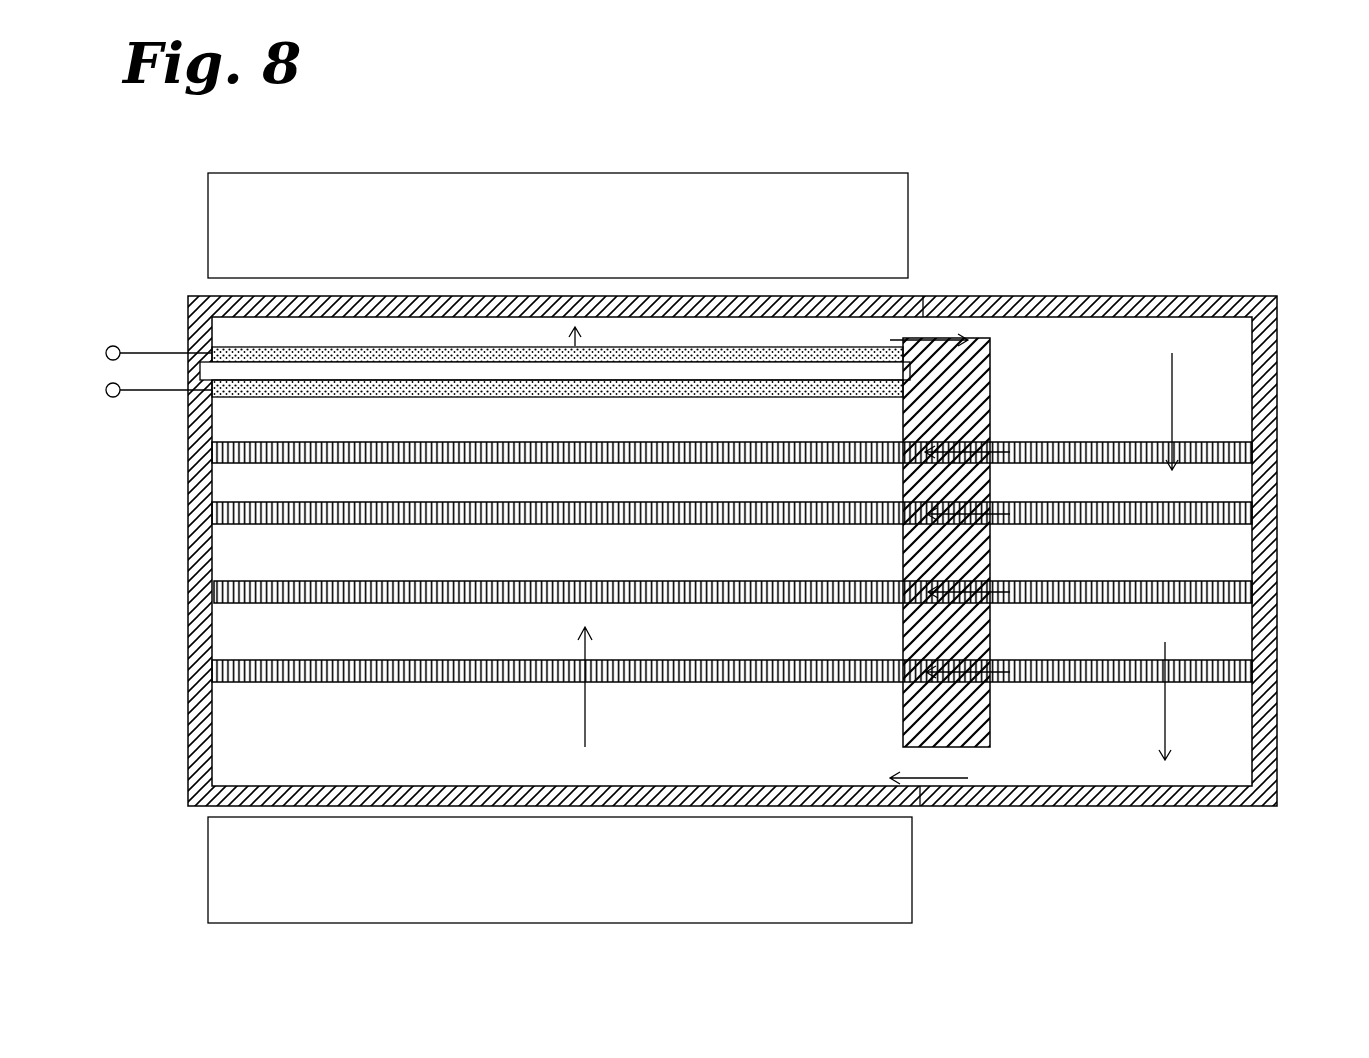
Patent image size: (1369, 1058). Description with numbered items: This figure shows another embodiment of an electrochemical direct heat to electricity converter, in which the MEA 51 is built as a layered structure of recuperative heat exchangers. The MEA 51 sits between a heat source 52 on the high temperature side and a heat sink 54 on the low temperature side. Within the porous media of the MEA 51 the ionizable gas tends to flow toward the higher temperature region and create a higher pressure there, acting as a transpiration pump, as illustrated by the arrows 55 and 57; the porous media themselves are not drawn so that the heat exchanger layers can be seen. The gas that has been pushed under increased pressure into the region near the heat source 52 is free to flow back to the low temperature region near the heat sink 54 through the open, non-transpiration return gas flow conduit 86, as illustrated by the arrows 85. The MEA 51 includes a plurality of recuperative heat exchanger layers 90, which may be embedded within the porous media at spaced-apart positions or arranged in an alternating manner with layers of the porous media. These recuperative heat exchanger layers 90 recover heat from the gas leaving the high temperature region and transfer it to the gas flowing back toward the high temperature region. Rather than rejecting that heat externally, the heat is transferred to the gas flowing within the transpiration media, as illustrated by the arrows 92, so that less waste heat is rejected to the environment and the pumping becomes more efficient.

The MEA 51 is at (257, 347).
The heat source 52 is at (860, 172).
The heat sink 54 is at (912, 907).
The arrow 55 is at (578, 330).
The arrow 57 is at (585, 690).
The arrows 85 is at (940, 297).
The return gas flow conduit 86 is at (1197, 337).
The recuperative heat exchanger layers 90 is at (1088, 500).
The arrows 92 is at (991, 440).